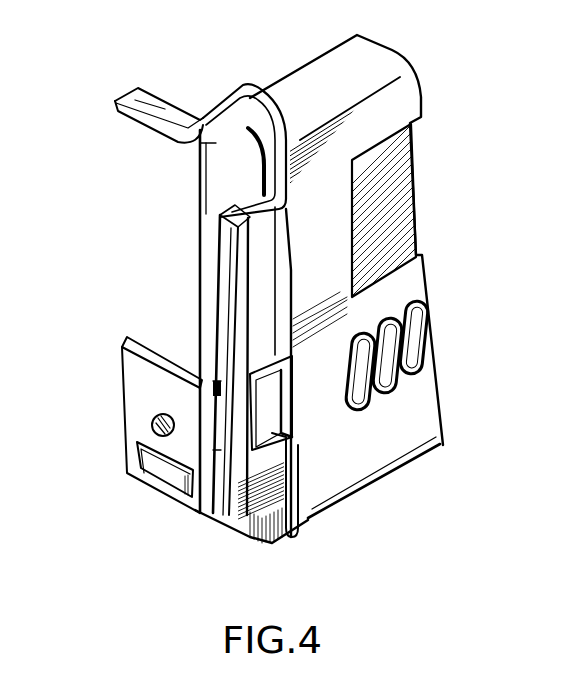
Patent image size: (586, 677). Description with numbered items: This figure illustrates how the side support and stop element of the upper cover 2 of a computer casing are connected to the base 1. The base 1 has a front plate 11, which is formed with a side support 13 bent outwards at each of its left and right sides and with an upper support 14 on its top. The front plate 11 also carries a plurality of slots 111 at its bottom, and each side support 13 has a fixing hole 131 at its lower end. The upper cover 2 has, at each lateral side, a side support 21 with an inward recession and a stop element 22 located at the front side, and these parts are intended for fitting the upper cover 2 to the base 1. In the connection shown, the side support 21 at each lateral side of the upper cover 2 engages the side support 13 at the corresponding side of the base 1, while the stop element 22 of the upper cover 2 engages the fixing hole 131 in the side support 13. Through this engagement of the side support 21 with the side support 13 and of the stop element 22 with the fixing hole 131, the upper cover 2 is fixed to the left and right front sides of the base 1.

The base 1 is at (198, 252).
The upper cover 2 is at (421, 183).
The front plate 11 is at (133, 383).
The slots 111 is at (172, 480).
The side support 13 is at (248, 537).
The fixing hole 131 is at (288, 447).
The upper support 14 is at (120, 115).
The side support 21 is at (262, 333).
The stop element 22 is at (215, 448).